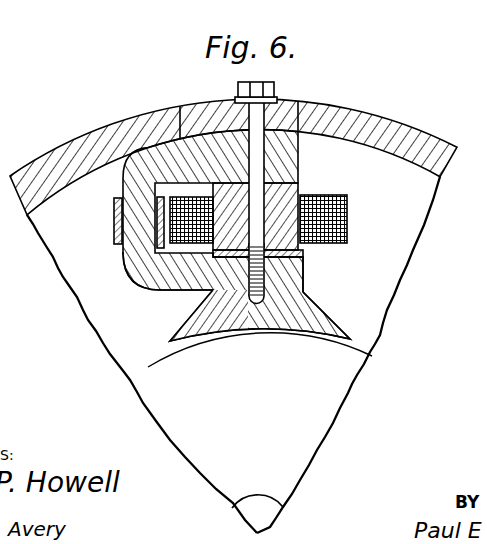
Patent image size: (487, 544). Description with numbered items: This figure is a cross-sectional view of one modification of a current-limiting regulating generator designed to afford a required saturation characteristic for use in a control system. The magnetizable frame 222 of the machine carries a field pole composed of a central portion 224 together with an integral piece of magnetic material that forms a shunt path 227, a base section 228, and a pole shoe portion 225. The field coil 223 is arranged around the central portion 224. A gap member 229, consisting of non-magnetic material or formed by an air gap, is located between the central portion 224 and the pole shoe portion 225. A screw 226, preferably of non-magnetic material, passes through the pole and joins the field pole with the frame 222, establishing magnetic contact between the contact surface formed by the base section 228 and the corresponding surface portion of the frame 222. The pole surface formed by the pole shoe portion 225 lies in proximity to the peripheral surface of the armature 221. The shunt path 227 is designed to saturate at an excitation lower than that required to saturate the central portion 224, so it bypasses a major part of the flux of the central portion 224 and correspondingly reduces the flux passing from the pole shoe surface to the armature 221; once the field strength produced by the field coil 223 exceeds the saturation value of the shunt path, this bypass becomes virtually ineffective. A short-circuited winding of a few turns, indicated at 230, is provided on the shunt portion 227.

The armature 221 is at (158, 360).
The magnetizable frame 222 is at (68, 146).
The field coil 223 is at (348, 207).
The central portion 224 is at (299, 184).
The pole shoe portion 225 is at (317, 317).
The screw 226 is at (275, 101).
The shunt path 227 is at (168, 289).
The base section 228 is at (193, 106).
The gap member 229 is at (304, 256).
The side plate 230 is at (115, 236).